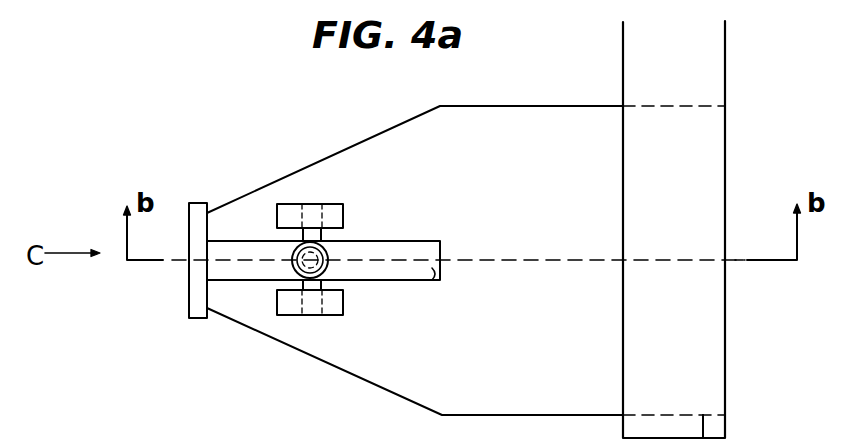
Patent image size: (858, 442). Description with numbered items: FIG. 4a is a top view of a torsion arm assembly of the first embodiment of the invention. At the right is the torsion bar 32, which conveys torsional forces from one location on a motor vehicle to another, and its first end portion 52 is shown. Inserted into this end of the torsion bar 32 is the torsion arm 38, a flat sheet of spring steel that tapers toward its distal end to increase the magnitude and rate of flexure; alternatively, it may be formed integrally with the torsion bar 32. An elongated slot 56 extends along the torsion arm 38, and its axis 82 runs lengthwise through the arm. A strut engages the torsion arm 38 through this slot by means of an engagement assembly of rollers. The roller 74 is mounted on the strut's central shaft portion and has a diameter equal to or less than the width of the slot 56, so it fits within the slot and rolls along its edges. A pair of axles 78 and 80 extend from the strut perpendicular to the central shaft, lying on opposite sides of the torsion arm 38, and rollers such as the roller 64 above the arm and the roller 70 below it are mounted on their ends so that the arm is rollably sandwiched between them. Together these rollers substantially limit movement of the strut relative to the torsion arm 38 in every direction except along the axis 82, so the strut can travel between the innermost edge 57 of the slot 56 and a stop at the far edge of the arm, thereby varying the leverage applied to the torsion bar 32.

The torsion bar 32 is at (725, 80).
The torsion arm 38 is at (528, 106).
The first end portion of torsion bar 52 is at (720, 360).
The elongated slot 56 is at (420, 247).
The innermost edge of slot 57 is at (432, 280).
The roller 64 is at (299, 204).
The roller 70 is at (290, 316).
The roller 74 is at (325, 250).
The axis of slot 82 is at (163, 262).
The axle 80 is at (283, 436).
The axle 78 is at (378, 436).